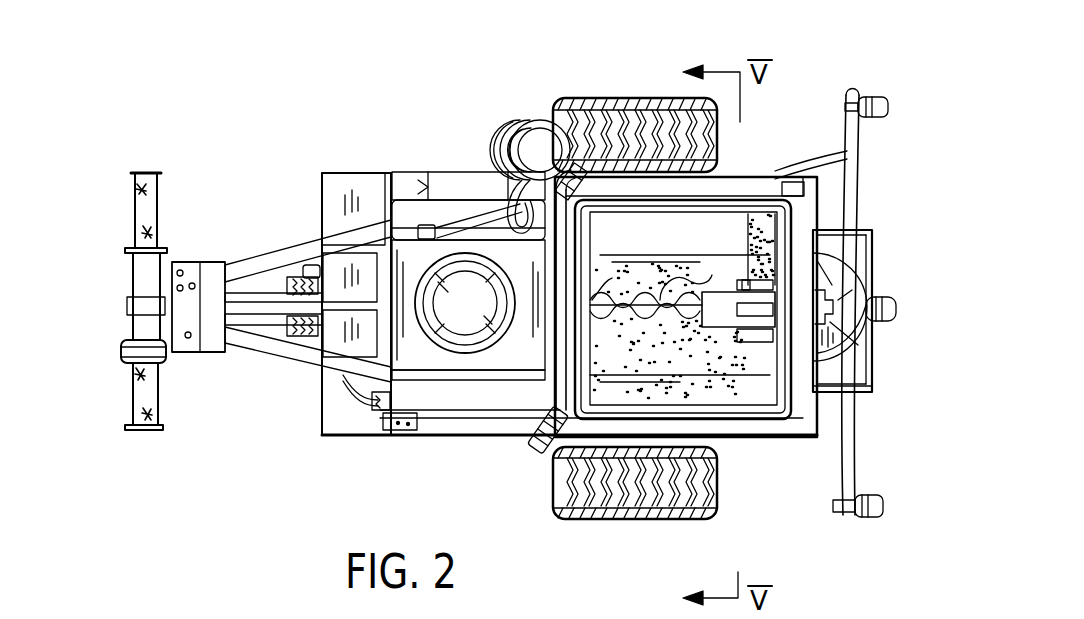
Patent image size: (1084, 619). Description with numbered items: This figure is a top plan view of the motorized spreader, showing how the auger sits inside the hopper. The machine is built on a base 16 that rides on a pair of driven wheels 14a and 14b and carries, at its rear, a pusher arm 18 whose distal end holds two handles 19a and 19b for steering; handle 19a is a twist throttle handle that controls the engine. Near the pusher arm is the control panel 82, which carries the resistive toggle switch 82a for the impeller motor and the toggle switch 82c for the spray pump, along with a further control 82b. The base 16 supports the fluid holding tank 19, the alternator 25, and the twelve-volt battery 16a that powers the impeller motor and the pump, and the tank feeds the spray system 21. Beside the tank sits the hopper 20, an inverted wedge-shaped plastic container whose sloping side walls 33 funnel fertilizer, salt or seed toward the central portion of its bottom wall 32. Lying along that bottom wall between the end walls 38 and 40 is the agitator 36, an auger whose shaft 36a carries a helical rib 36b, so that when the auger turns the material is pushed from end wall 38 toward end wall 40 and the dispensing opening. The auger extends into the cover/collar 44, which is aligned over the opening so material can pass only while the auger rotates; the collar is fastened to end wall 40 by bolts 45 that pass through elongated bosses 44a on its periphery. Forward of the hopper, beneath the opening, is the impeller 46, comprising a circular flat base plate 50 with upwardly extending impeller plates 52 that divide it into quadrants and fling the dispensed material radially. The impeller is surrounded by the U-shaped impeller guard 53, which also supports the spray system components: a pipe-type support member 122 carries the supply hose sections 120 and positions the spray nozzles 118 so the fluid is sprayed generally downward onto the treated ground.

The driven wheel 14a is at (685, 514).
The driven wheel 14b is at (667, 117).
The base 16 is at (547, 355).
The battery 16a is at (375, 423).
The pusher arm 18 is at (263, 245).
The fluid holding tank 19 is at (420, 215).
The twist throttle handle 19a is at (148, 402).
The handle 19b is at (152, 195).
The hopper 20 is at (750, 255).
The spray system 21 is at (517, 104).
The alternator 25 is at (341, 188).
The bottom wall 32 is at (612, 270).
The sloping side walls 33 is at (650, 403).
The agitator 36 is at (633, 357).
The shaft 36a is at (696, 257).
The helical rib 36b is at (720, 472).
The end wall 38 is at (558, 330).
The end wall 40 is at (879, 318).
The cover/collar 44 is at (720, 325).
The elongated bosses 44a is at (764, 282).
The bolts 45 is at (762, 282).
The impeller 46 is at (864, 265).
The base plate 50 is at (845, 305).
The impeller plates 52 is at (860, 330).
The impeller guard 53 is at (872, 383).
The control panel 82 is at (235, 288).
The resistive toggle switch 82a is at (193, 289).
The hitch bolt 82b is at (180, 270).
The toggle switch 82c is at (177, 288).
The spray nozzles 118 is at (888, 105).
The supply hose sections 120 is at (832, 165).
The support member 122 is at (858, 184).